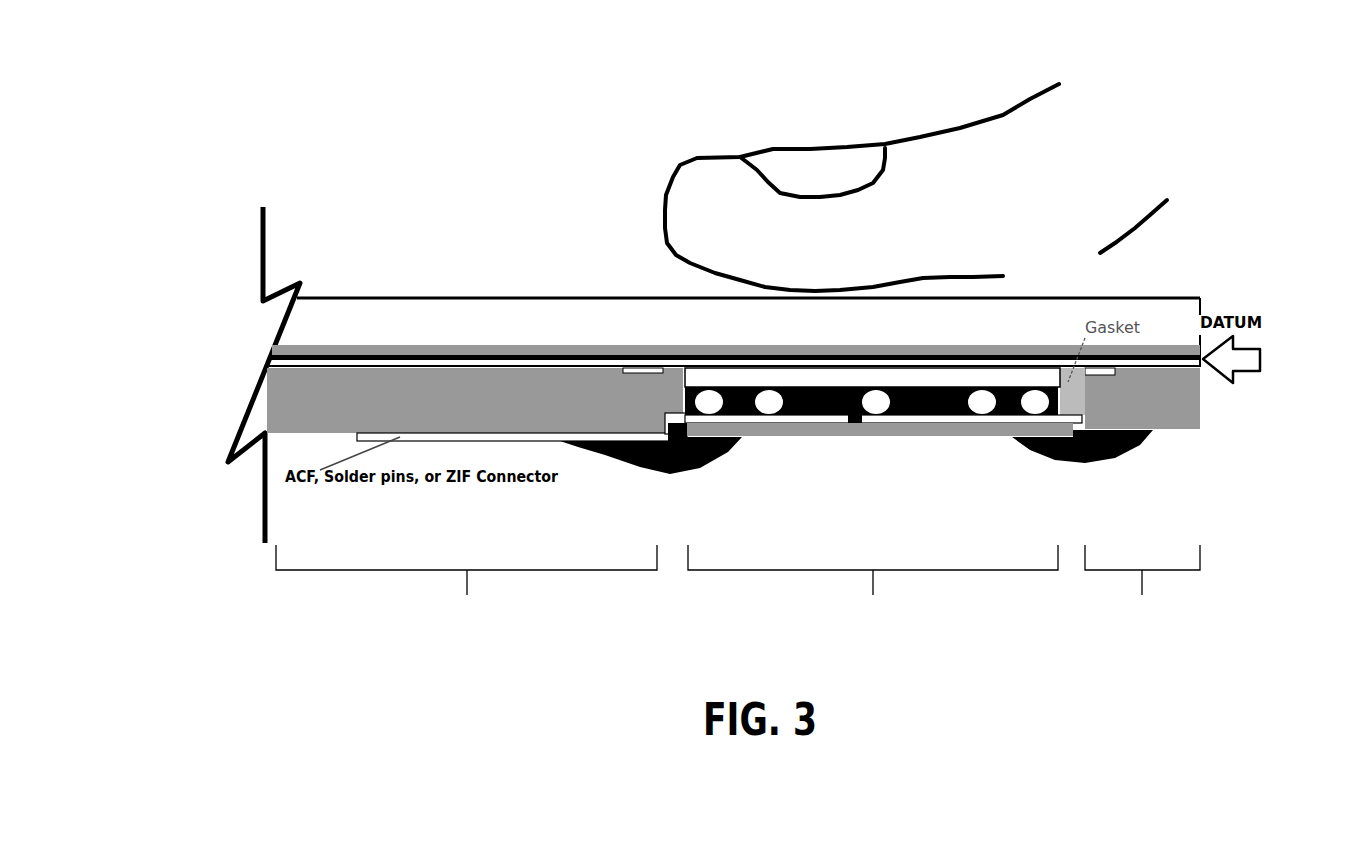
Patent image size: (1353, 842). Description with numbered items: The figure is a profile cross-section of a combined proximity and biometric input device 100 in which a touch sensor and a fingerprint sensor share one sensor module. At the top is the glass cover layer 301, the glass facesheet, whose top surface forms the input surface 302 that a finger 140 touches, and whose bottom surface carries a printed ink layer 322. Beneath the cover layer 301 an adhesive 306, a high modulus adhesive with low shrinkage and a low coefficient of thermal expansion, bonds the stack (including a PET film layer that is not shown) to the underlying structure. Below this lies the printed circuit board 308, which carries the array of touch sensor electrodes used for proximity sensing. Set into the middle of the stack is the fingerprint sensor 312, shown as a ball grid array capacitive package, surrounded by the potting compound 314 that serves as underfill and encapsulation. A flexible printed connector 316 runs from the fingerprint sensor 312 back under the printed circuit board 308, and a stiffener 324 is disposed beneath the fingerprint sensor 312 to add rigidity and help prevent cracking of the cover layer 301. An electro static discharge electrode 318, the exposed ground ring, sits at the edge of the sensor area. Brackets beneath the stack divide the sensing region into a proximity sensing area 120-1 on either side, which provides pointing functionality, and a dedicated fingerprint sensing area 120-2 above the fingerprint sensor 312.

The input device 100 is at (414, 138).
The finger 140 is at (927, 145).
The cover layer 301 is at (748, 332).
The input surface 302 is at (468, 297).
The adhesive layer 306 is at (298, 360).
The printed circuit board 308 is at (733, 400).
The fingerprint sensor 312 is at (958, 382).
The potting compound 314 is at (1058, 442).
The flexible printed connector 316 is at (810, 420).
The electro static discharge electrode 318 is at (1180, 292).
The printed ink layer 322 is at (937, 352).
The stiffener 324 is at (970, 430).
The proximity sensing area 120-1 is at (738, 586).
The fingerprint sensing area 120-2 is at (873, 586).